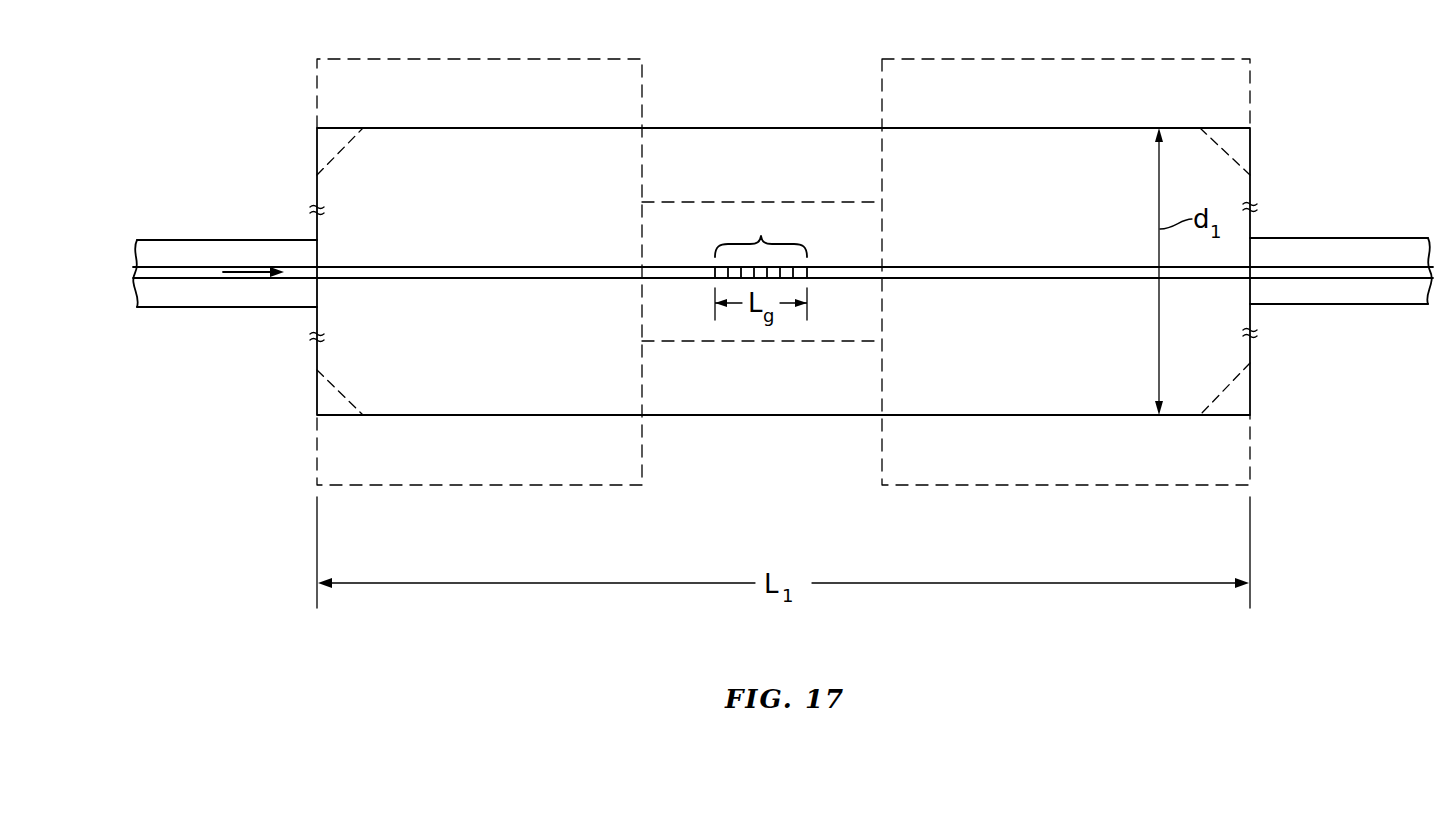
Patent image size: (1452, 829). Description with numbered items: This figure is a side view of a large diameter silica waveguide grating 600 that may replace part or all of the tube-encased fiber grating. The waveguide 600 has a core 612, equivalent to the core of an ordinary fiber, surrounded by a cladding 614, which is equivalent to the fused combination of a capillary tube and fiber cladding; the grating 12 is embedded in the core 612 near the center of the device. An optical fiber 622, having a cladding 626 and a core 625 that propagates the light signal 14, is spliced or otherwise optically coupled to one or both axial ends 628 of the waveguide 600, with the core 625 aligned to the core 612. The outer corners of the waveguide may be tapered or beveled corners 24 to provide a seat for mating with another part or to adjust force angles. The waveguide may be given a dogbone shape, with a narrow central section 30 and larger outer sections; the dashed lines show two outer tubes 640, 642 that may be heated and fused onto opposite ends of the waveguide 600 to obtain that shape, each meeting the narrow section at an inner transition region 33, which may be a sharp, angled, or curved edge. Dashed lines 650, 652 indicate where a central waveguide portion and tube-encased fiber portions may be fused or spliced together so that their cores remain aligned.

The large diameter silica waveguide grating 600 is at (306, 134).
The grating 12 is at (761, 236).
The light signal 14 is at (245, 272).
The beveled outer corners 24 is at (350, 395).
The narrow central section 30 is at (735, 200).
The inner transition region 33 is at (545, 138).
The core 612 is at (403, 267).
The cladding 614 is at (995, 226).
The optical fiber 622 is at (205, 228).
The core 625 is at (201, 273).
The cladding 626 is at (157, 240).
The axial ends 628 is at (317, 218).
The outer tube 640 is at (492, 58).
The outer tube 642 is at (1030, 58).
The fused region 650 is at (640, 238).
The fused region 652 is at (882, 237).